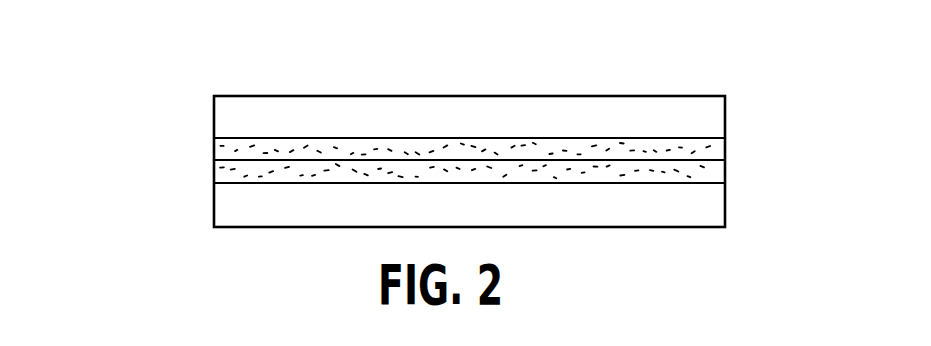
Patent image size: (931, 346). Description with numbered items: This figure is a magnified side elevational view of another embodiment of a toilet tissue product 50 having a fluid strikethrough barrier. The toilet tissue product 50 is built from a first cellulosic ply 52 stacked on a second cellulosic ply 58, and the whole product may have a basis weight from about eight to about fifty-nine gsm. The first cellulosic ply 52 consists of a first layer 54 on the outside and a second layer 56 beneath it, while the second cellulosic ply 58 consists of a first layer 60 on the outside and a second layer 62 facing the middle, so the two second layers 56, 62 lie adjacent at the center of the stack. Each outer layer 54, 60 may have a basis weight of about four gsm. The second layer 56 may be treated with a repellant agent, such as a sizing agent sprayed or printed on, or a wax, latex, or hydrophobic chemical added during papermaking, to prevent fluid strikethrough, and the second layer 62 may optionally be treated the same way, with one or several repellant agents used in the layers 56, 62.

The toilet tissue product 50 is at (143, 105).
The first cellulosic ply 52 is at (770, 111).
The first layer 54 is at (708, 120).
The second layer 56 is at (715, 150).
The second cellulosic ply 58 is at (755, 193).
The first layer 60 is at (232, 212).
The second layer 62 is at (218, 170).